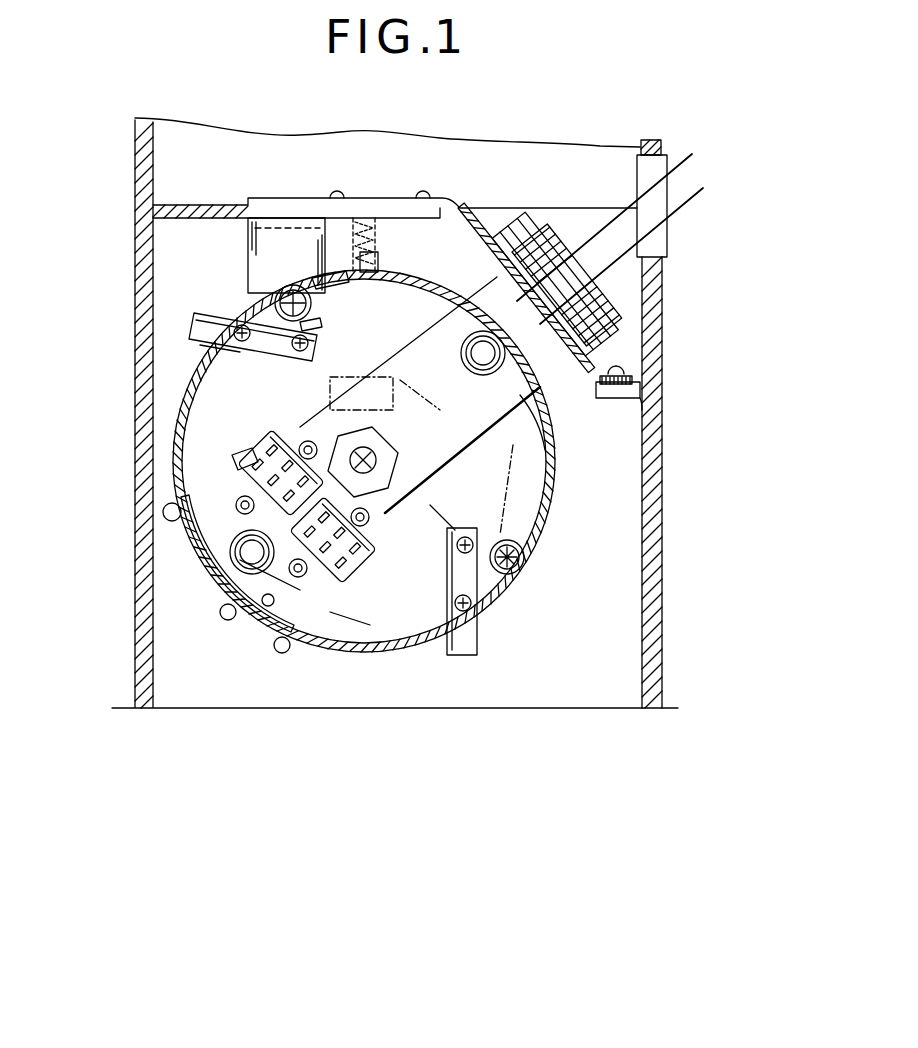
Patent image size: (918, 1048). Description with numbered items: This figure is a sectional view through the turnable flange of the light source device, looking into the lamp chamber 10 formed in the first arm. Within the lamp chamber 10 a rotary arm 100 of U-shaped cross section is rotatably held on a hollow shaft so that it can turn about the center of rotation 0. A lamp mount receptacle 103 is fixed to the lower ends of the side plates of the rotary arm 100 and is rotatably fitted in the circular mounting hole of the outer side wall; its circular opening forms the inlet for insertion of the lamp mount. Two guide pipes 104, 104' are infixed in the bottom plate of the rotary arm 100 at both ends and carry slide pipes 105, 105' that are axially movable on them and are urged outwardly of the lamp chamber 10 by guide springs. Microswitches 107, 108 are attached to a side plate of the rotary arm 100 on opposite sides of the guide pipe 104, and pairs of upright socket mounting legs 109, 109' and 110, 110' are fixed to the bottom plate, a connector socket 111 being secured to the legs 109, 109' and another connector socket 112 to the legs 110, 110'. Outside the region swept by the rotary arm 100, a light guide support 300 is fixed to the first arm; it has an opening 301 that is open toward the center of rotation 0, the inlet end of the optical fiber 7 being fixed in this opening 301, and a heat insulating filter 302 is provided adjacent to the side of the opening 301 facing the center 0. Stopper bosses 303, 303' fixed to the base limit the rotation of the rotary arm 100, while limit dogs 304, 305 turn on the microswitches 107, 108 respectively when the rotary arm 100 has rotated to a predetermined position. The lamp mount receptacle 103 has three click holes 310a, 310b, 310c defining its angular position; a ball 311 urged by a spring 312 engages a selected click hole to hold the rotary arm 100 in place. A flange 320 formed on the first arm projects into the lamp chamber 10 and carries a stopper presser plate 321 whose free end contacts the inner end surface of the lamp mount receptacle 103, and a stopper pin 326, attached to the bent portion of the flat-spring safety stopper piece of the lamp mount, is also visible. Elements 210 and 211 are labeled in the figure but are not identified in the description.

The lamp chamber 10 is at (572, 668).
The optical fiber 7 is at (630, 248).
The flange 320 is at (192, 205).
The stopper presser plate 321 is at (258, 254).
The spring 312 is at (372, 215).
The ball 311 is at (370, 258).
The click hole 310b is at (350, 282).
The stopper boss 303' is at (247, 300).
The stopper pin 326 is at (312, 312).
The limit dog 304 is at (205, 323).
The click hole 310c is at (240, 350).
The lamp mount receptacle 103 is at (412, 652).
The center of rotation 0 is at (376, 460).
The rotary arm 100 is at (388, 494).
The guide 211 is at (418, 378).
The socket mounting leg 109 is at (253, 473).
The socket mounting leg 109' is at (305, 420).
The connector socket 111 is at (250, 452).
The socket mounting leg 110 is at (332, 566).
The socket mounting leg 110' is at (380, 558).
The guide 210 is at (446, 536).
The guide pipe 104 is at (216, 571).
The slide pipe 105 is at (240, 604).
The microswitch 107 is at (178, 462).
The microswitch 108 is at (275, 607).
The connector socket 112 is at (355, 600).
The limit dog 305 is at (478, 640).
The stopper boss 303 is at (545, 567).
The slide pipe 105' is at (507, 472).
The guide pipe 104' is at (570, 436).
The click hole 310a is at (532, 383).
The opening 301 is at (618, 338).
The light guide support 300 is at (568, 303).
The heat insulating filter 302 is at (628, 400).